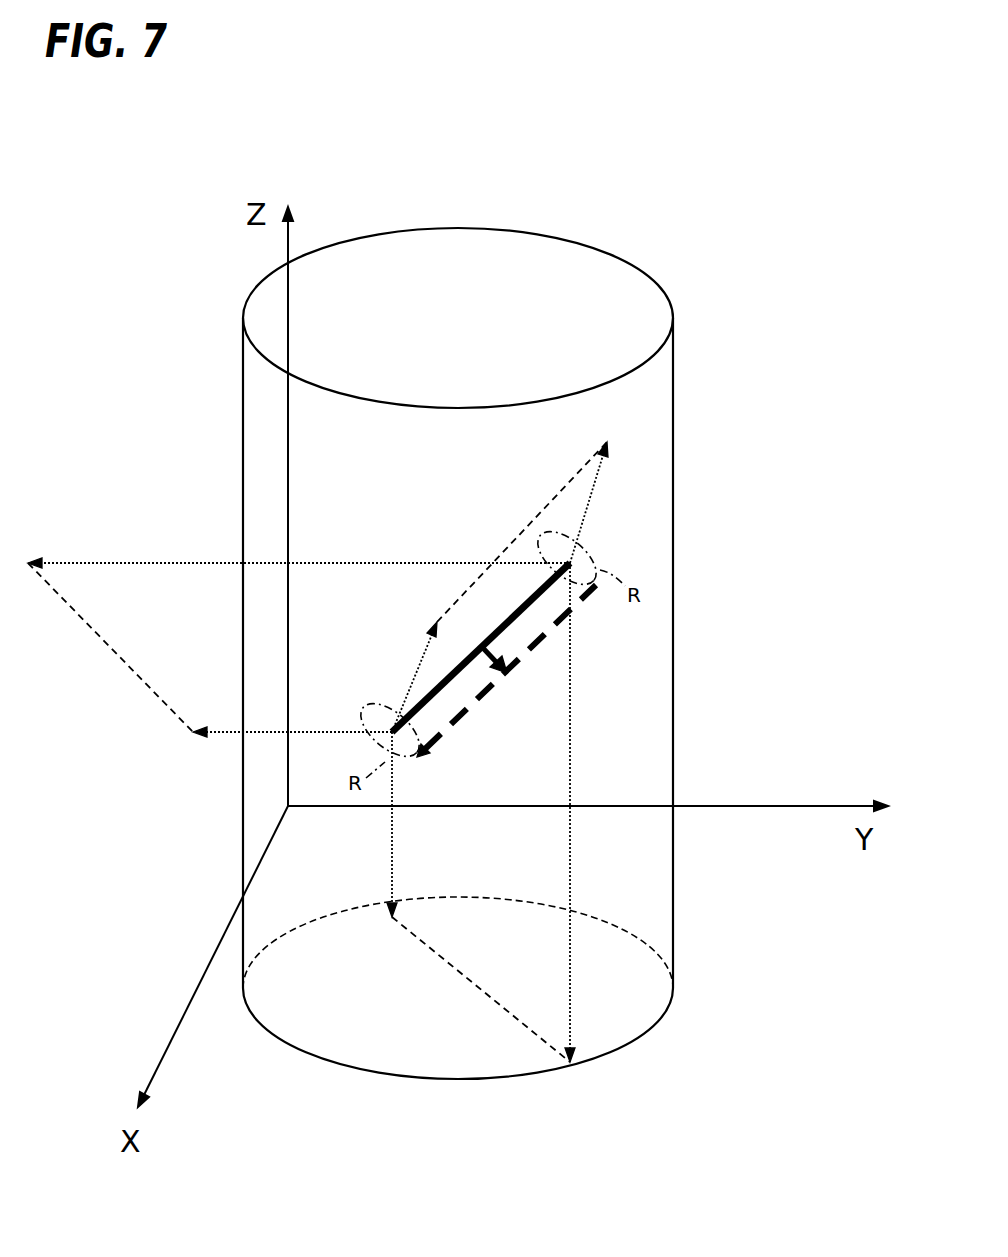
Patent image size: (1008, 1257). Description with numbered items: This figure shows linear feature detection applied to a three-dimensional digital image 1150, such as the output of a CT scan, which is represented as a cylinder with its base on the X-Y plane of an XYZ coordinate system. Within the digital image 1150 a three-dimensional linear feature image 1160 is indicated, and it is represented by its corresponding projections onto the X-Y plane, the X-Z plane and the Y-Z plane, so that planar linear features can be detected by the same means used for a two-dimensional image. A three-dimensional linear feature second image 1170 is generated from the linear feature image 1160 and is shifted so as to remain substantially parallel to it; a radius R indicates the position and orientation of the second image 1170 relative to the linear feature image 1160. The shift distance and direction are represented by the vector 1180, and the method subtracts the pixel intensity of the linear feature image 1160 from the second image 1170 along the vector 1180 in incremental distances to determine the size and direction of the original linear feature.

The three-dimensional digital image 1150 is at (673, 897).
The 3-D linear feature image 1160 is at (452, 672).
The 3-D linear feature second image 1170 is at (455, 722).
The vector 1180 is at (518, 662).